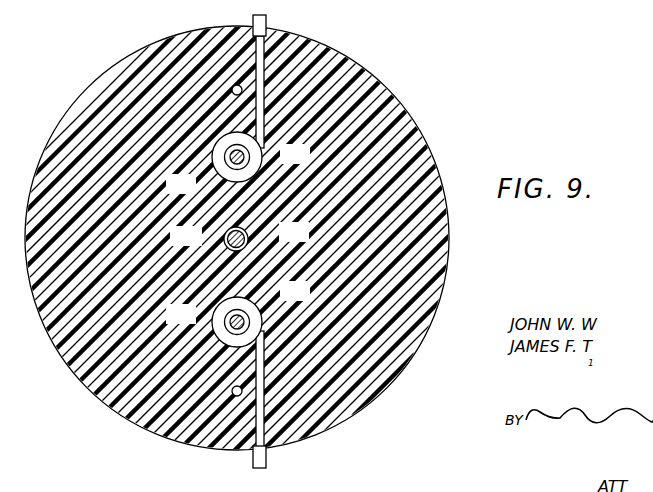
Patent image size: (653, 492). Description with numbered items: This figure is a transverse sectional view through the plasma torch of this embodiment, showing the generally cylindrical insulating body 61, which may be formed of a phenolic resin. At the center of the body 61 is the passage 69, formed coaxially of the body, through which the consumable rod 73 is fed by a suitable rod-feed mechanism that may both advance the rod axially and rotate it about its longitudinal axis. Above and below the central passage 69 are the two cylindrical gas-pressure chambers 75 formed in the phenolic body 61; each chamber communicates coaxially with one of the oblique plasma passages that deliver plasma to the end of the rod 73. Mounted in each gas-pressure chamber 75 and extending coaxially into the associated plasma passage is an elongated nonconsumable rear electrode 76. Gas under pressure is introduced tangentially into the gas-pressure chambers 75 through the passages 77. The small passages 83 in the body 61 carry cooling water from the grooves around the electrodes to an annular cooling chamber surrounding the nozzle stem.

The insulating body 61 is at (388, 102).
The passage 69 is at (224, 238).
The consumable rod 73 is at (249, 238).
The gas-pressure chambers 75 is at (262, 158).
The rear electrode 76 is at (232, 160).
The passages 77 is at (265, 50).
The passages 83 is at (233, 87).